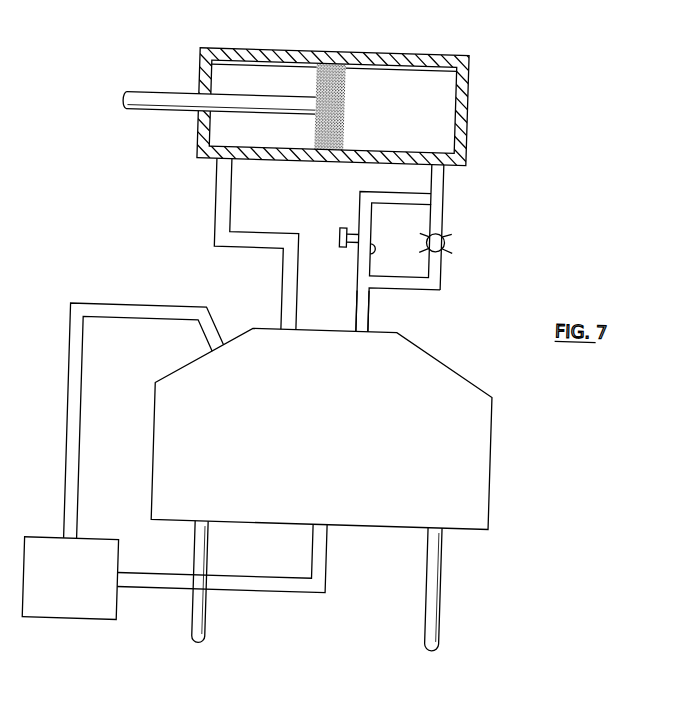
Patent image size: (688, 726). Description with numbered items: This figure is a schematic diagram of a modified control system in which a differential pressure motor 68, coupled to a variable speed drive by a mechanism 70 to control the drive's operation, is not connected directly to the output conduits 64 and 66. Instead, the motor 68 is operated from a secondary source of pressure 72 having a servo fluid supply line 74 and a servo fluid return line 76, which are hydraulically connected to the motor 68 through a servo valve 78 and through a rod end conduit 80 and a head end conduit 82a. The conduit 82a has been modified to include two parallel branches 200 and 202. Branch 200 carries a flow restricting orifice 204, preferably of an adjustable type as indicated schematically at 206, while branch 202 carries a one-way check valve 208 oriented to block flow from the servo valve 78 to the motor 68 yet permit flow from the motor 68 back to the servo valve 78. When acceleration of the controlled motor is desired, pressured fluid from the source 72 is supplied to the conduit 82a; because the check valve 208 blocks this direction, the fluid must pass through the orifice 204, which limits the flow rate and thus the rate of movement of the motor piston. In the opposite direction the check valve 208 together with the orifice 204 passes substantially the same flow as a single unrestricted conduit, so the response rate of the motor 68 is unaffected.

The differential pressure motor 68 is at (391, 52).
The mechanism coupling motor to variable speed drive 70 is at (40, 104).
The rod end conduit 80 is at (211, 207).
The branch 202 is at (437, 216).
The branch 200 is at (357, 200).
The head end conduit 82a is at (365, 316).
The flow restricting orifice 204 is at (368, 251).
The adjustable orifice means 206 is at (336, 237).
The one-way check valve 208 is at (441, 247).
The servo valve 78 is at (482, 435).
The servo fluid return line 76 is at (128, 323).
The secondary source of pressure 72 is at (90, 600).
The servo fluid supply line 74 is at (288, 591).
The output conduit 66 is at (206, 624).
The output conduit 64 is at (440, 628).